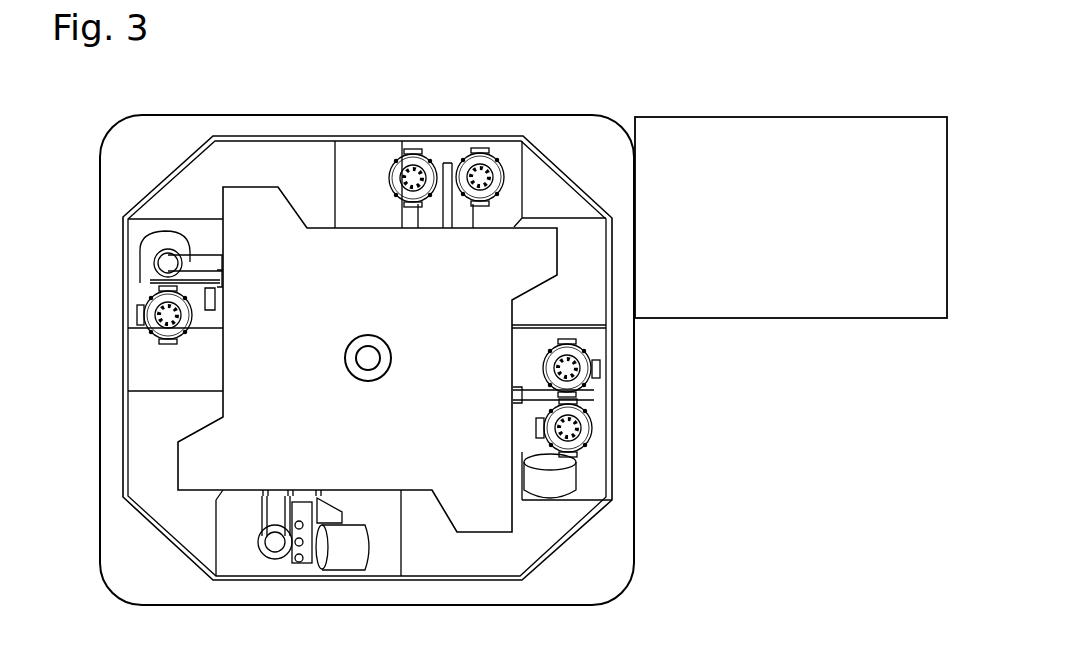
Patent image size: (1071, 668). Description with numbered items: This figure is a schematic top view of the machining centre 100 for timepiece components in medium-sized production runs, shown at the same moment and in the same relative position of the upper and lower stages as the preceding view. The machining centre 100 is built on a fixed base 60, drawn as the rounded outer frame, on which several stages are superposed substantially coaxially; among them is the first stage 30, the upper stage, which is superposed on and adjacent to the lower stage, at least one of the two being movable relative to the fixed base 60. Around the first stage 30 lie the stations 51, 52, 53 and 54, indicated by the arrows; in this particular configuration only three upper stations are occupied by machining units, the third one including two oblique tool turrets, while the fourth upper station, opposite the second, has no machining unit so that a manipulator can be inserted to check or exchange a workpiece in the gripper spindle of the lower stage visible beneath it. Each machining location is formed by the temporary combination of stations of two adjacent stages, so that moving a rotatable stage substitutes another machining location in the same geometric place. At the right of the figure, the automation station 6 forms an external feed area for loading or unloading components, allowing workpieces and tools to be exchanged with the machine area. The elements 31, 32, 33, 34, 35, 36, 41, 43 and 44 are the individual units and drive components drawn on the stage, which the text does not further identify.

The machining centre 100 is at (268, 98).
The fixed base 60 is at (243, 150).
The first stage 30 is at (283, 212).
The first actuator 41 is at (162, 238).
The first drive shaft 31 is at (163, 263).
The first motor 32 is at (148, 310).
The station 51 is at (205, 375).
The station 54 is at (435, 140).
The second actuator 44 is at (460, 213).
The automation station 6 is at (737, 165).
The third motor 36 is at (580, 365).
The station 53 is at (604, 397).
The fourth motor 35 is at (582, 428).
The third actuator 43 is at (562, 473).
The second drive shaft 33 is at (272, 553).
The fifth motor 34 is at (311, 563).
The station 52 is at (353, 510).